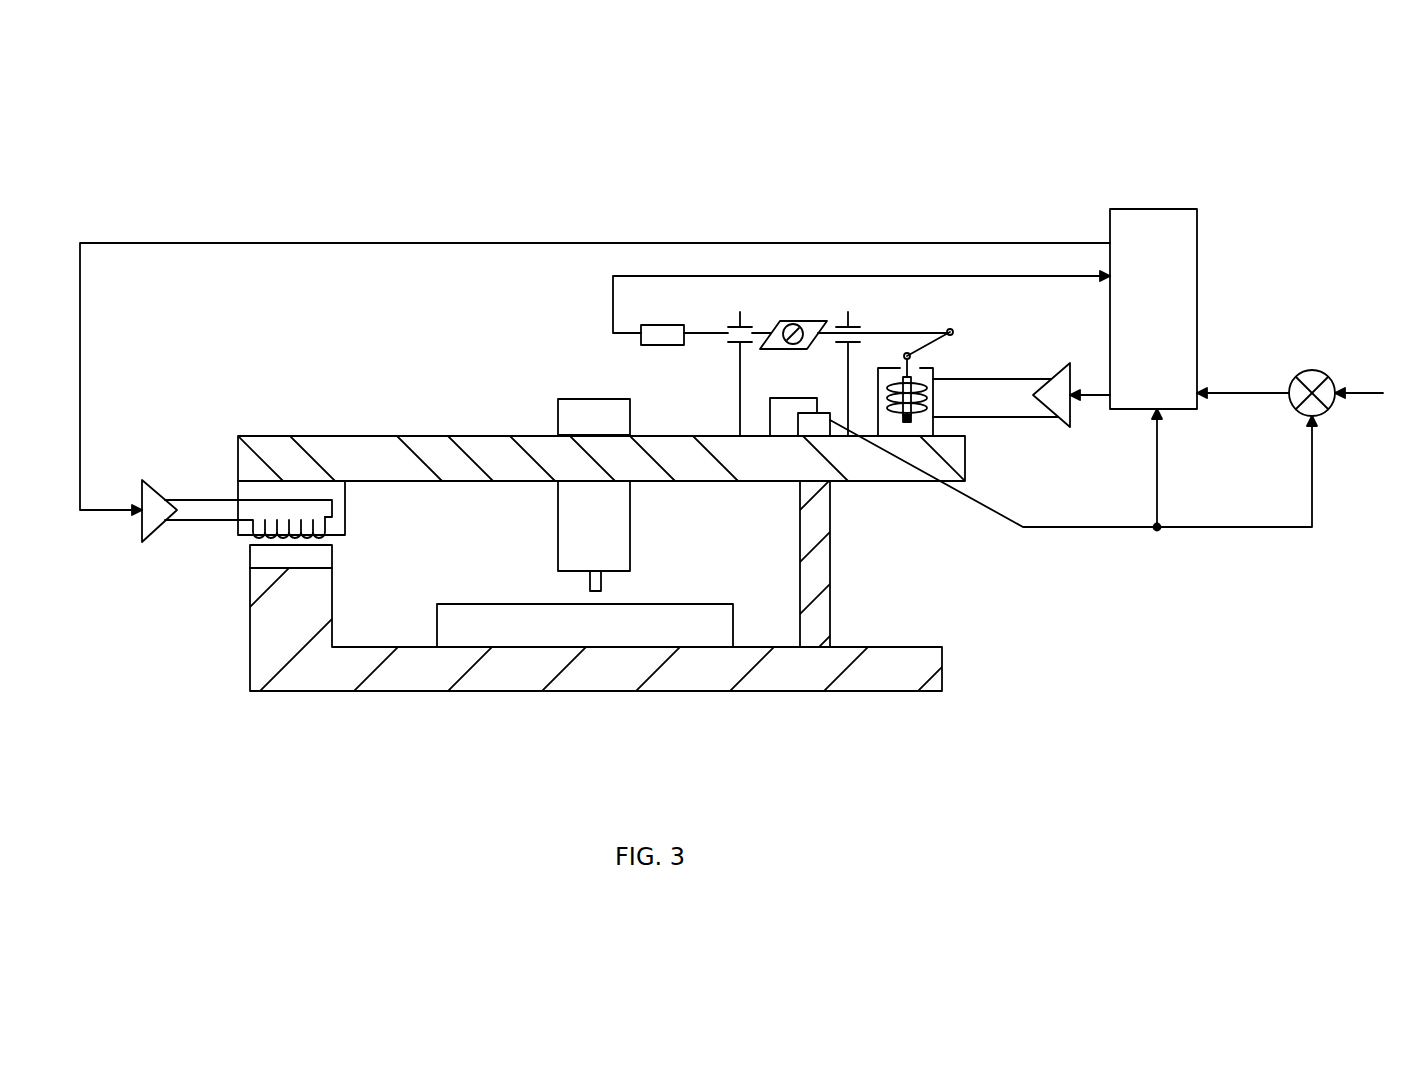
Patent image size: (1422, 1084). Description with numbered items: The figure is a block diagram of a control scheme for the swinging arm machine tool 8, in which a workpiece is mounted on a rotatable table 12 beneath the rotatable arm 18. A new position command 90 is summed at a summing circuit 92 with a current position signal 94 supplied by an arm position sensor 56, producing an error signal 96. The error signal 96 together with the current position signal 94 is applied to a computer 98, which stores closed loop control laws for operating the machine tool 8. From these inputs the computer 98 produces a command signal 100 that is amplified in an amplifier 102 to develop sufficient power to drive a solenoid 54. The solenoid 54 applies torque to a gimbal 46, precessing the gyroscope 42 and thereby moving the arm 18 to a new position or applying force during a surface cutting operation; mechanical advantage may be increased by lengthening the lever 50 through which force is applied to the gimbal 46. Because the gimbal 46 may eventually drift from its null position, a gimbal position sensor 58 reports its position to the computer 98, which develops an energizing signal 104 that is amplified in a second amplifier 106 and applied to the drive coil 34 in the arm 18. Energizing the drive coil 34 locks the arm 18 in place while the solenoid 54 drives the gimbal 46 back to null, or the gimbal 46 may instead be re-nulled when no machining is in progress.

The machine tool 8 is at (520, 723).
The rotatable table 12 is at (700, 640).
The arm 18 is at (383, 473).
The drive coil 34 is at (332, 508).
The gyroscope 42 is at (715, 352).
The gimbal 46 is at (815, 319).
The lever 50 is at (932, 340).
The solenoid 54 is at (948, 360).
The arm position sensor 56 is at (798, 422).
The gimbal position sensor 58 is at (660, 324).
The new position command 90 is at (1362, 390).
The summing circuit 92 is at (1323, 377).
The current position signal 94 is at (1155, 500).
The error signal 96 is at (1253, 393).
The computer 98 is at (1166, 247).
The command signal 100 is at (1093, 393).
The amplifier 102 is at (1005, 377).
The energizing signal 104 is at (957, 243).
The amplifier 106 is at (160, 492).